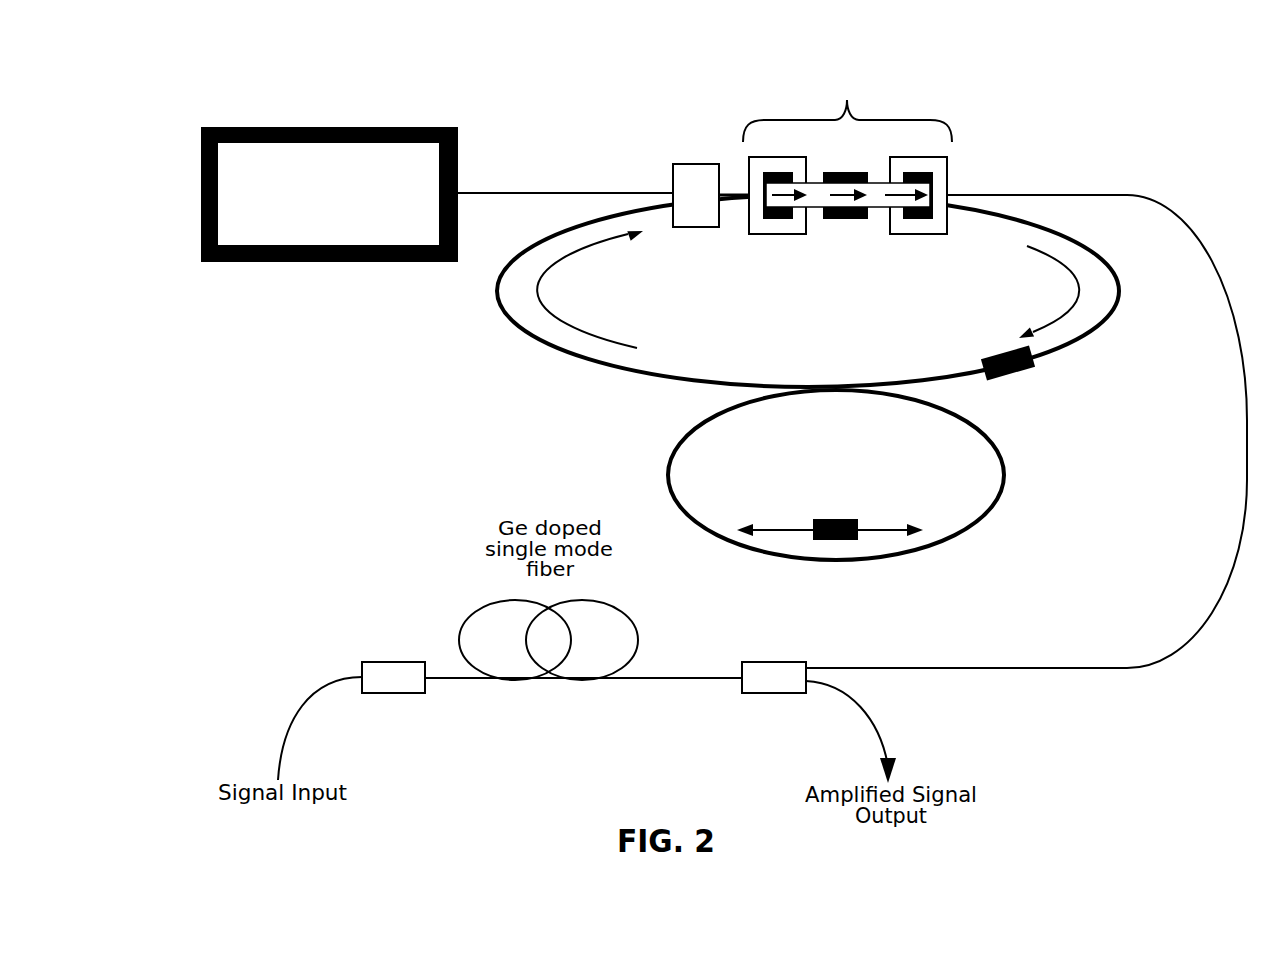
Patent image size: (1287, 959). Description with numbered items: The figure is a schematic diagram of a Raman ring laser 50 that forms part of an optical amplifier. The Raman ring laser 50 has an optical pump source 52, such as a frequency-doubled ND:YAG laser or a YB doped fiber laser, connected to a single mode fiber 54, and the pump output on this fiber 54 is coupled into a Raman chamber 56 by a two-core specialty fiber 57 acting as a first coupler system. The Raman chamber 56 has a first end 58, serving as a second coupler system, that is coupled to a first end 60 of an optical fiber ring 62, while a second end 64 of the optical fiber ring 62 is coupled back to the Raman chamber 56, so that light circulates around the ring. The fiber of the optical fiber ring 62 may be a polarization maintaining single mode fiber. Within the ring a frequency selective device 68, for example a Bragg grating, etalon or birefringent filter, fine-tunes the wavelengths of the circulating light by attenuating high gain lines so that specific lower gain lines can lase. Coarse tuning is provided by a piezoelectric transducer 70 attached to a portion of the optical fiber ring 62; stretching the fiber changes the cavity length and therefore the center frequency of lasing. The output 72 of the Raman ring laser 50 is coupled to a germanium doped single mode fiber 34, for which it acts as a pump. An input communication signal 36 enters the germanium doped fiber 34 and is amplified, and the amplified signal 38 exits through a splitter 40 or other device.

The Raman ring laser 50 is at (680, 33).
The optical pump source 52 is at (413, 127).
The single mode fiber 54 is at (548, 193).
The Raman chamber 56 is at (776, 280).
The two-core specialty fiber 57 is at (695, 164).
The first end of the Raman chamber 58 is at (910, 234).
The first end of the optical fiber ring 60 is at (960, 205).
The optical fiber ring 62 is at (777, 234).
The second end of the optical fiber ring 64 is at (737, 200).
The frequency selective device 68 is at (1020, 374).
The piezoelectric transducer 70 is at (835, 519).
The output of the Raman ring laser 72 is at (1045, 193).
The germanium doped single mode fiber 34 is at (633, 625).
The input communication signal 36 is at (318, 690).
The amplified signal 38 is at (876, 723).
The splitter 40 is at (782, 662).